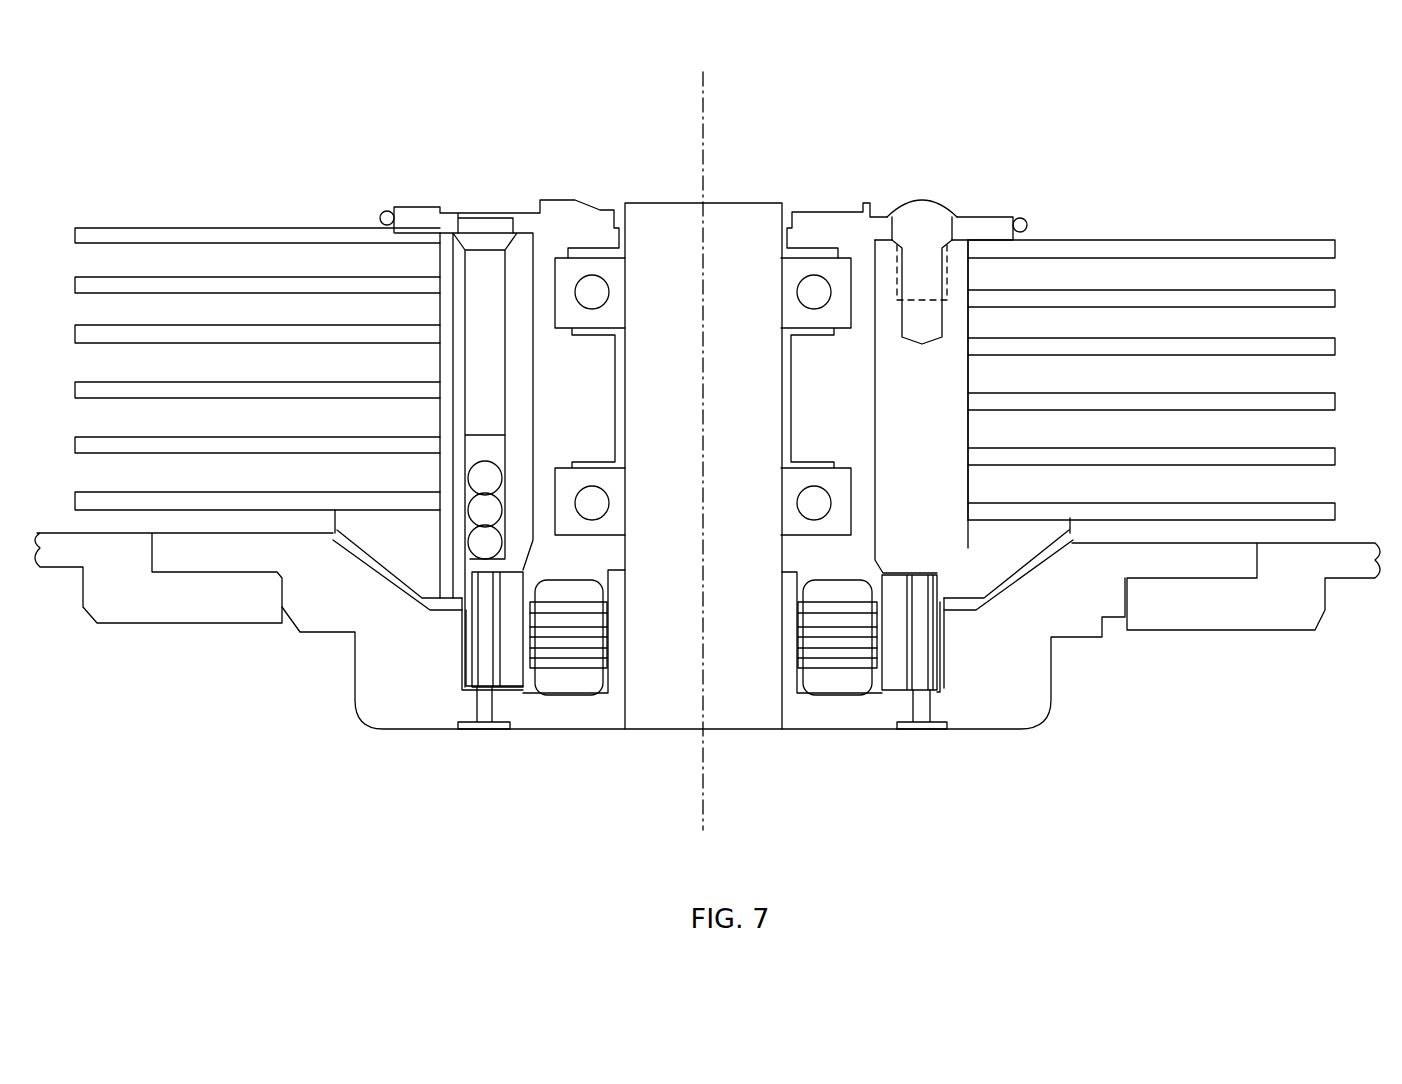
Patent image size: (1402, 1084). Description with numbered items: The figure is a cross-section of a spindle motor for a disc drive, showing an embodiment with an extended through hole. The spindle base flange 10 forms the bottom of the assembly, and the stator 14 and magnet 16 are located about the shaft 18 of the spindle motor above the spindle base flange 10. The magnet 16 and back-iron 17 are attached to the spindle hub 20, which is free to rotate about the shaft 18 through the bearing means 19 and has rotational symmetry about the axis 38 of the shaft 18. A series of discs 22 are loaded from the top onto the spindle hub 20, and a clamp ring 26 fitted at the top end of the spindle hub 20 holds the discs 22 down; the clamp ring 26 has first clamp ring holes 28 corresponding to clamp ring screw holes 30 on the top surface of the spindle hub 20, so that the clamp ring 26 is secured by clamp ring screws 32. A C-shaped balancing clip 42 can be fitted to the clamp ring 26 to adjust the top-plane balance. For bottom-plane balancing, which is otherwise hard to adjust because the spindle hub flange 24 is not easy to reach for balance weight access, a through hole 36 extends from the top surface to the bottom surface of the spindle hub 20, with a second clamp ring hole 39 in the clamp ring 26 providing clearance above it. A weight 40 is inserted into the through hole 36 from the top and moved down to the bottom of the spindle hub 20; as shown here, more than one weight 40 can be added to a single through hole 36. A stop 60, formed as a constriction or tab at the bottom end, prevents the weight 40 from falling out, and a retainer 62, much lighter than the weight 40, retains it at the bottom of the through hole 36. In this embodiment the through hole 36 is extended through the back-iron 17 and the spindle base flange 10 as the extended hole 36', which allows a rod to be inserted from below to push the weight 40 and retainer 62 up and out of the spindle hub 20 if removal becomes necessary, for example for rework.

The spindle base flange 10 is at (993, 700).
The stator 14 is at (835, 667).
The magnet 16 is at (892, 655).
The back-iron 17 is at (945, 632).
The shaft 18 is at (655, 685).
The bearing means 19 is at (573, 272).
The spindle hub 20 is at (888, 315).
The discs 22 is at (1245, 353).
The spindle hub flange 24 is at (1027, 547).
The clamp ring 26 is at (380, 208).
The first clamp ring holes 28 is at (892, 217).
The clamp ring screw holes 30 is at (940, 325).
The clamp ring screws 32 is at (937, 207).
The through hole 36 is at (460, 401).
The extended hole 36' is at (648, 746).
The axis 38 is at (698, 763).
The second clamp ring hole 39 is at (513, 215).
The weight 40 is at (472, 545).
The C-shaped balancing clip 42 is at (1028, 227).
The stop 60 is at (485, 572).
The retainer 62 is at (465, 430).